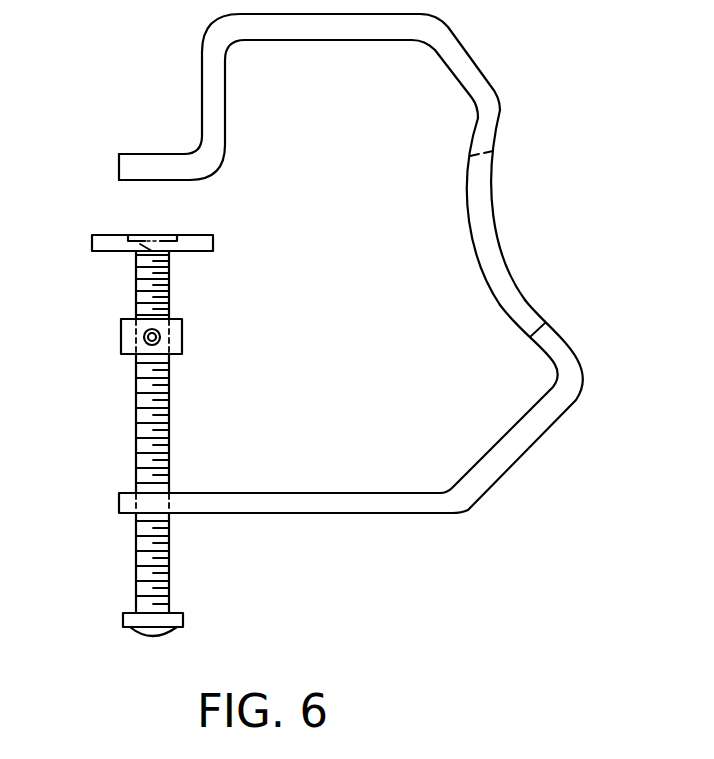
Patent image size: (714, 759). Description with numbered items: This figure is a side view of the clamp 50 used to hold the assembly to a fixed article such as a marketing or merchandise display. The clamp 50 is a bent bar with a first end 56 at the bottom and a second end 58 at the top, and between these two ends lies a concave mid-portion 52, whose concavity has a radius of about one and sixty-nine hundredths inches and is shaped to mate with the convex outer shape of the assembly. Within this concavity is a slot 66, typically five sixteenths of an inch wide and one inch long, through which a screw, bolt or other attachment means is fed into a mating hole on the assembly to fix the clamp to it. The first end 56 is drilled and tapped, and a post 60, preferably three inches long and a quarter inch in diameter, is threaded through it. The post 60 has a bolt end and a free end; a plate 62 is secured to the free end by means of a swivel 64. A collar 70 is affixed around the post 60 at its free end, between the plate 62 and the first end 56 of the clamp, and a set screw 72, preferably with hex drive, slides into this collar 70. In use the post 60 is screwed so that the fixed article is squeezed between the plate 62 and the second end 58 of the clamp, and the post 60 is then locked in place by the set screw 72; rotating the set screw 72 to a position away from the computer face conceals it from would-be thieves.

The clamp 50 is at (311, 273).
The concave mid-portion 52 is at (493, 117).
The first end 56 is at (128, 505).
The second end 58 is at (128, 165).
The post 60 is at (153, 427).
The plate 62 is at (197, 240).
The swivel 64 is at (145, 242).
The slot 66 is at (493, 250).
The collar 70 is at (176, 338).
The set screw 72 is at (144, 337).